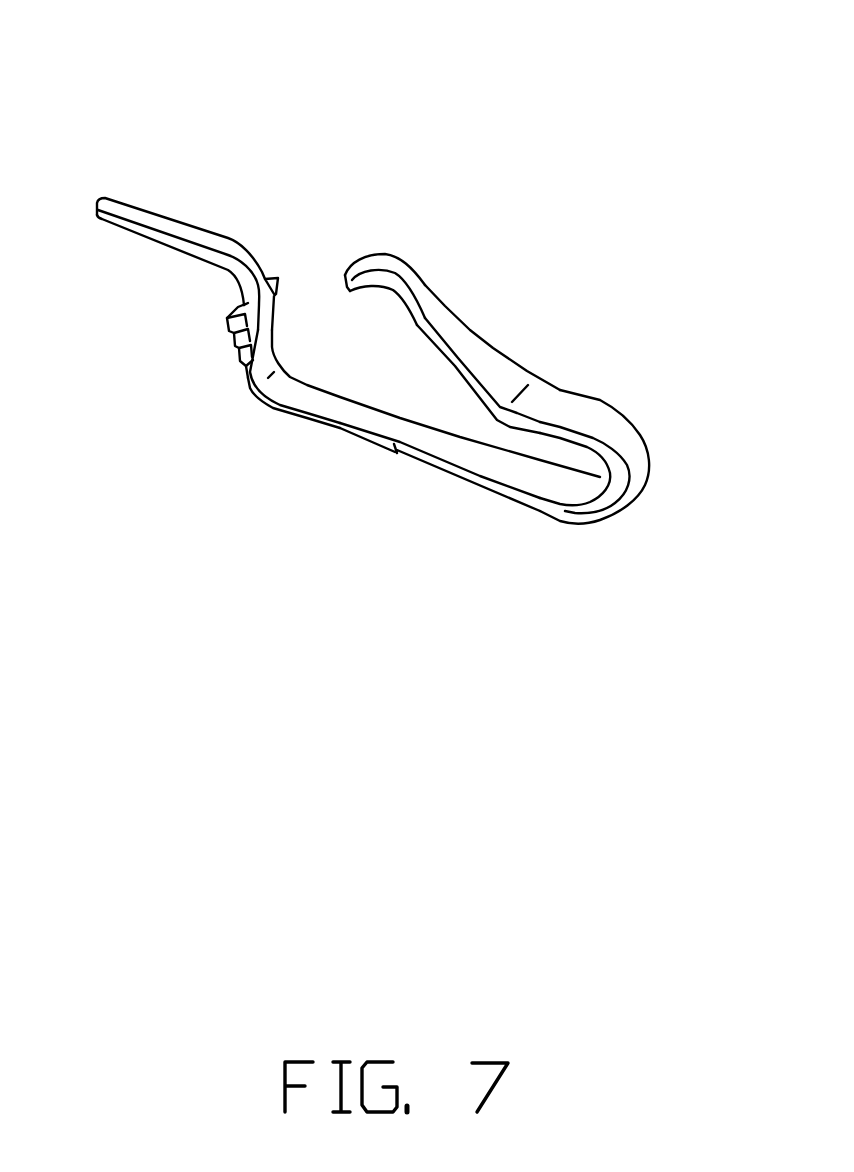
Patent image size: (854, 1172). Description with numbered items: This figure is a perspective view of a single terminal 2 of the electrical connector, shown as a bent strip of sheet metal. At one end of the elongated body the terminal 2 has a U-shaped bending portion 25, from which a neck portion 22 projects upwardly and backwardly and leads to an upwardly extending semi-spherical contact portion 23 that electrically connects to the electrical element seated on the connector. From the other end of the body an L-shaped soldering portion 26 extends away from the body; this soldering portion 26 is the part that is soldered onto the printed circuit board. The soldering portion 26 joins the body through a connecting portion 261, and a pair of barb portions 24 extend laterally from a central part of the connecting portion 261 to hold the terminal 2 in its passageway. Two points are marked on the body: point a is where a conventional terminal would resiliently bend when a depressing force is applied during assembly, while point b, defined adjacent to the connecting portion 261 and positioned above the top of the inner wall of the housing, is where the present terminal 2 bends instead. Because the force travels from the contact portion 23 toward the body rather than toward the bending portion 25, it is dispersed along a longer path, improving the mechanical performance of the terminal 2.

The terminal 2 is at (407, 348).
The neck portion 22 is at (482, 353).
The contact portion 23 is at (407, 263).
The barb portions 24 is at (227, 330).
The U-shaped bending portion 25 is at (623, 457).
The L-shaped soldering portion 26 is at (120, 213).
The connecting portion 261 is at (250, 378).
The point a is at (513, 473).
The point b is at (315, 400).